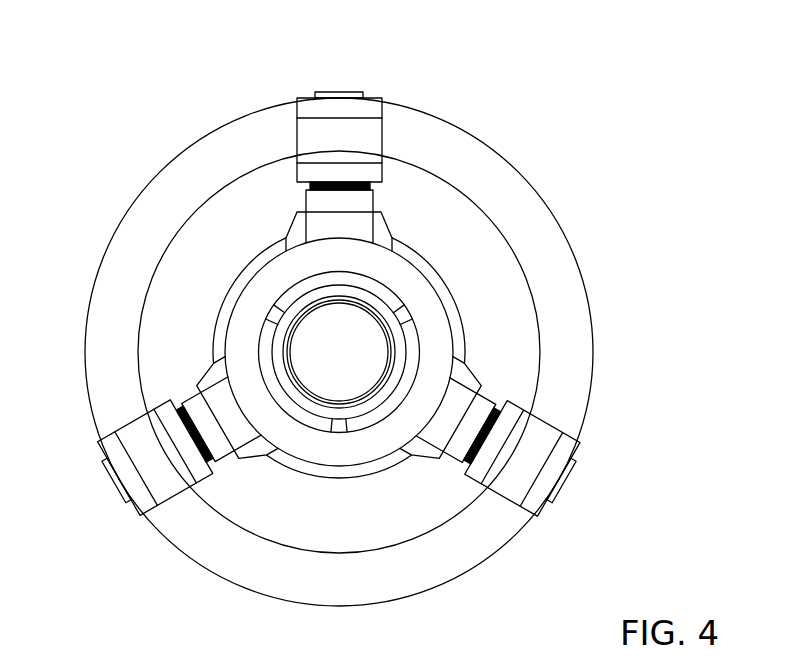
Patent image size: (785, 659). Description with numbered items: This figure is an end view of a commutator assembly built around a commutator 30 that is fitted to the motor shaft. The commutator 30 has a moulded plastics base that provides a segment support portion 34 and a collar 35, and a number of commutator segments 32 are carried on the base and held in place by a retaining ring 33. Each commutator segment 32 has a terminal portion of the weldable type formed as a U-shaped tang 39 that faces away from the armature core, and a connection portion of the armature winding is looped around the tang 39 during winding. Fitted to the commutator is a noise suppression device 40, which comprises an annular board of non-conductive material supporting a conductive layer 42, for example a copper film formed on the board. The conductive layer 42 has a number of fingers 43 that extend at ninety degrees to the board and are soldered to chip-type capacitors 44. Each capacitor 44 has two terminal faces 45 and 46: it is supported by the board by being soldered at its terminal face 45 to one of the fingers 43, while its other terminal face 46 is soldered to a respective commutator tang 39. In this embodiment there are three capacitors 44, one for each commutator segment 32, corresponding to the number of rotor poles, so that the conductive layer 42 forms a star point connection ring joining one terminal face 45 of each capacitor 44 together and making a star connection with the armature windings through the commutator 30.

The commutator 30 is at (578, 103).
The commutator segments 32 is at (308, 286).
The retaining ring 33 is at (435, 332).
The segment support portion 34 is at (396, 355).
The collar 35 is at (447, 293).
The U-shaped tang 39 is at (307, 173).
The noise suppression device 40 is at (560, 222).
The conductive layer 42 is at (440, 152).
The fingers 43 is at (350, 90).
The chip-type capacitors 44 is at (293, 150).
The terminal face 45 is at (312, 108).
The terminal face 46 is at (305, 201).